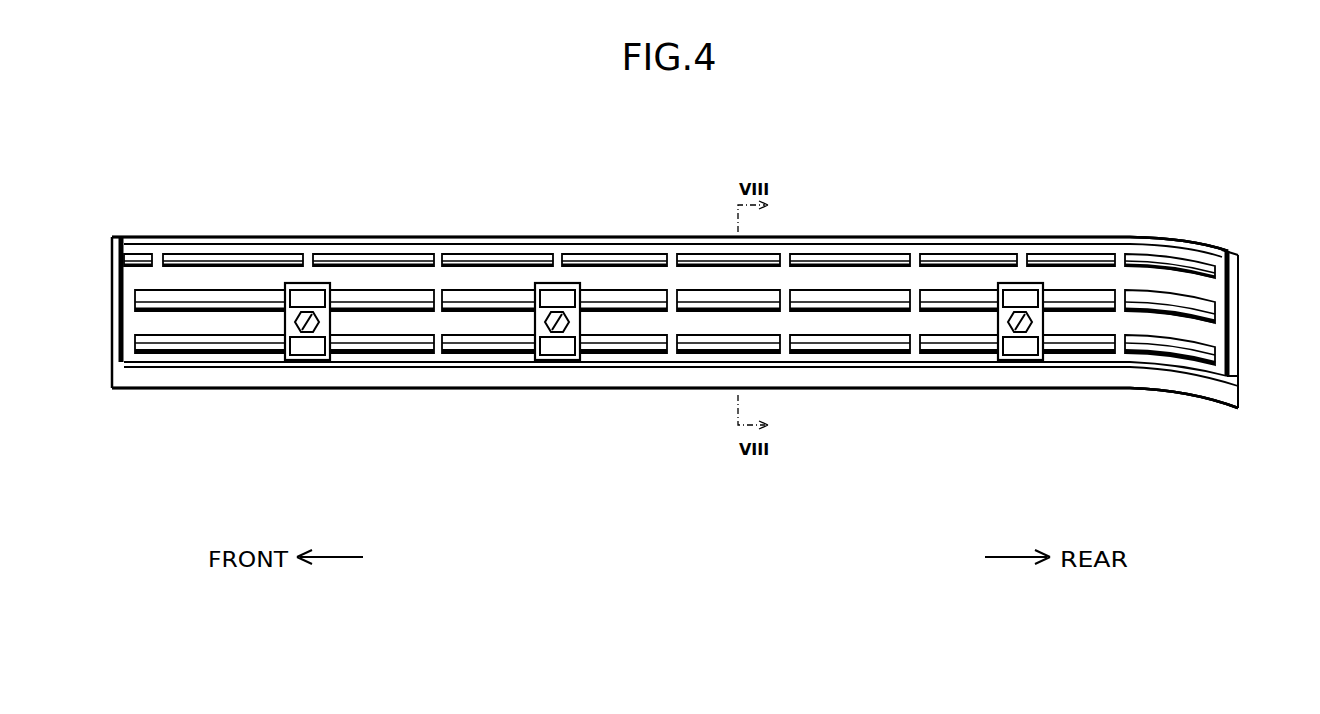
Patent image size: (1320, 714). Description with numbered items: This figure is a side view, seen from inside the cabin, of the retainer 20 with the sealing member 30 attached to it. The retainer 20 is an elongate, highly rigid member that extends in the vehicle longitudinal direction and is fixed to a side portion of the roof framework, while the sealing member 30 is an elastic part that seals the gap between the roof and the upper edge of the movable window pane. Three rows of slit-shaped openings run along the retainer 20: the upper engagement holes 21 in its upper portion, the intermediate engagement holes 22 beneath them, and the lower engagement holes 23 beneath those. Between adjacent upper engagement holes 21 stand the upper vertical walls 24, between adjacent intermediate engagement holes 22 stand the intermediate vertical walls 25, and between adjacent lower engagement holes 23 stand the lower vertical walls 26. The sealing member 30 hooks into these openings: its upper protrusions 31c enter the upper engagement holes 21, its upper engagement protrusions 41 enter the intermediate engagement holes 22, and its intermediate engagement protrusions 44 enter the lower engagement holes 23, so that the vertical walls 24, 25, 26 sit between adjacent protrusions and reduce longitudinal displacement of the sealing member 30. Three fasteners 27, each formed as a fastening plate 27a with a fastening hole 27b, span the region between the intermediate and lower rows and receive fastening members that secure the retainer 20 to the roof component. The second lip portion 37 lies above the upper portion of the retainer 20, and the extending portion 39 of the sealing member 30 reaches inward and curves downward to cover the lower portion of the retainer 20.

The retainer 20 is at (772, 283).
The upper engagement holes 21 is at (396, 253).
The intermediate engagement holes 22 is at (350, 293).
The lower engagement holes 23 is at (419, 346).
The upper vertical walls 24 is at (130, 255).
The intermediate vertical walls 25 is at (127, 300).
The lower vertical walls 26 is at (127, 345).
The fasteners 27 is at (285, 318).
The fastening plate 27a is at (328, 328).
The fastening hole 27b is at (303, 333).
The sealing member 30 is at (478, 237).
The upper protrusion 31c is at (538, 258).
The second lip portion 37 is at (1037, 237).
The extending portion 39 is at (728, 389).
The upper engagement protrusion 41 is at (613, 297).
The intermediate engagement protrusion 44 is at (646, 346).